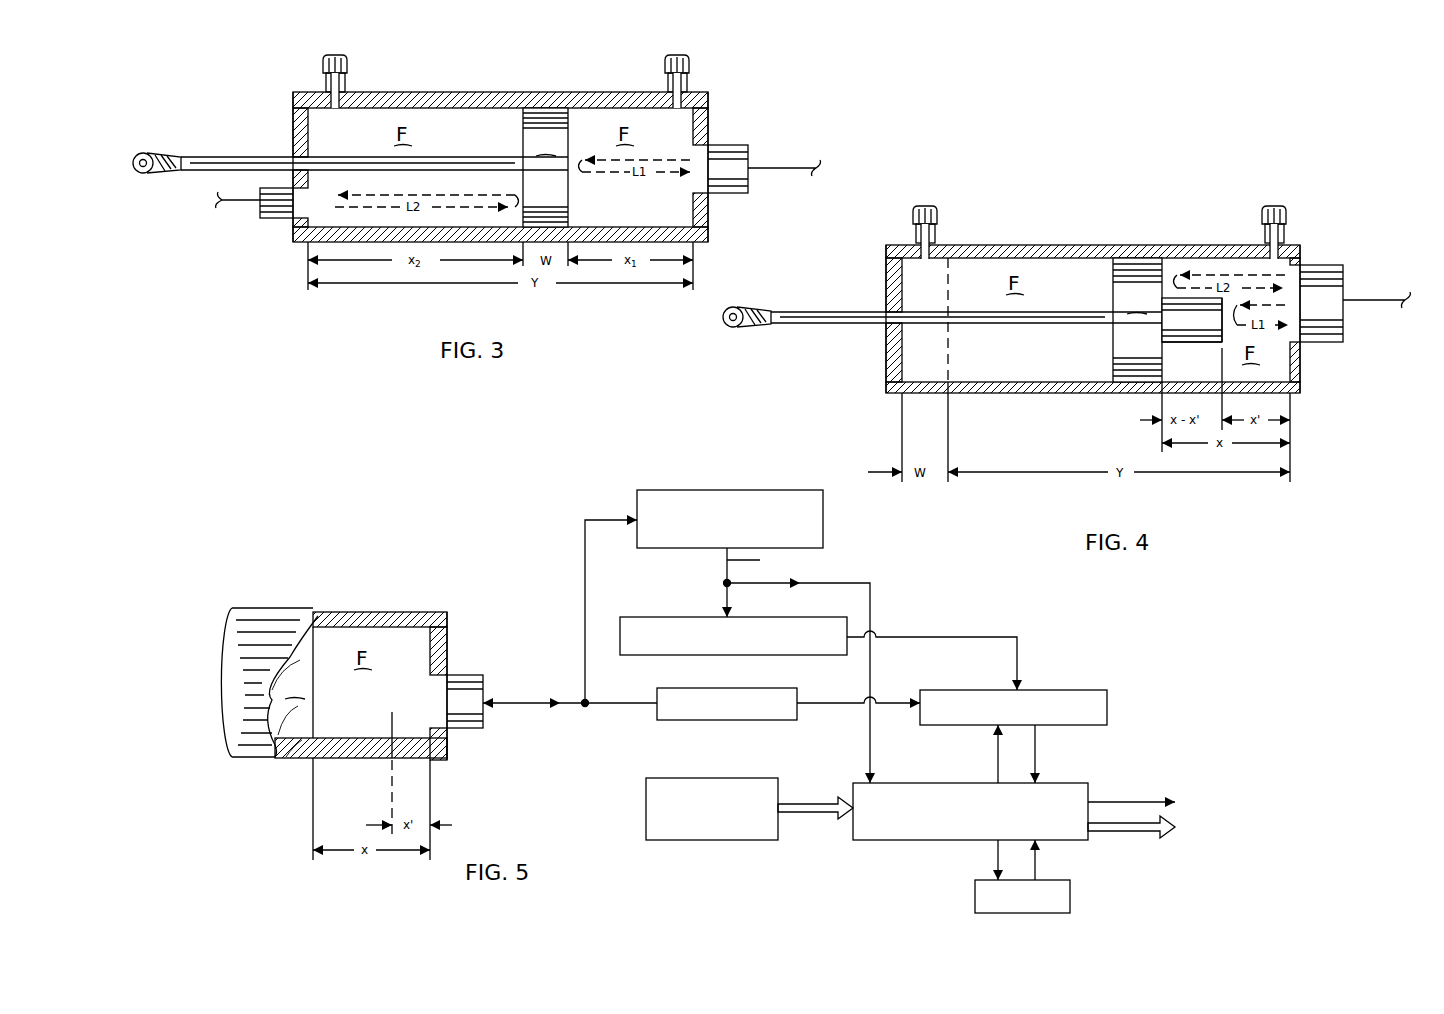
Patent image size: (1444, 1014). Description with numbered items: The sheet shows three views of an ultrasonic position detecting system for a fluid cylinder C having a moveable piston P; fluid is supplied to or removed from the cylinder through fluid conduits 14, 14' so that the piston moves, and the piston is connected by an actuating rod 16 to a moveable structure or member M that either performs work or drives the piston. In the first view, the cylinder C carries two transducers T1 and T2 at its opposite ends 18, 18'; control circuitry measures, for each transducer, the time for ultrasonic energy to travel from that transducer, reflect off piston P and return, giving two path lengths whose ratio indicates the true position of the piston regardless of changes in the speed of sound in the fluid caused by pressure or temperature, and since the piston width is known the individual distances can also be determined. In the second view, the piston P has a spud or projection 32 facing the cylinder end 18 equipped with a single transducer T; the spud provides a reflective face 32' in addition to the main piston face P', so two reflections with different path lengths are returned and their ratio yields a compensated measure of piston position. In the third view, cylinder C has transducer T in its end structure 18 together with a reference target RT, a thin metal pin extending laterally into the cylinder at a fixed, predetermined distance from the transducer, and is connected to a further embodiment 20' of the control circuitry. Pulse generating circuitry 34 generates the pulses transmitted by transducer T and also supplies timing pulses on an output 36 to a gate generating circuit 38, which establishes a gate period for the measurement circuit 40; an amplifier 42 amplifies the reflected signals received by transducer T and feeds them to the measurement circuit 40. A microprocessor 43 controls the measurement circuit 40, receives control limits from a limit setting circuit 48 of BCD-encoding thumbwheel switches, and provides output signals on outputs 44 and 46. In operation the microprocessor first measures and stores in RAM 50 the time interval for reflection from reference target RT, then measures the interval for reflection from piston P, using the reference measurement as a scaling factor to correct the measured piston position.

In FIG. 3, the fluid conduit 14 is at (377, 62).
In FIG. 4, the fluid conduit 14 is at (966, 215).
In FIG. 3, the fluid conduit 14' is at (720, 67).
In FIG. 4, the fluid conduit 14' is at (1321, 219).
In FIG. 3, the actuating rod 16 is at (345, 157).
In FIG. 4, the actuating rod 16 is at (930, 312).
In FIG. 3, the cylinder end 18 is at (754, 161).
In FIG. 4, the cylinder end 18 is at (1348, 305).
In FIG. 5, the cylinder end 18 is at (471, 664).
In FIG. 3, the cylinder end 18' is at (243, 160).
In FIG. 4, the cylinder end 18' is at (847, 319).
In FIG. 5, the control circuitry 20' is at (854, 700).
In FIG. 4, the spud or projection 32 is at (1155, 383).
In FIG. 4, the reflective face 32' is at (1293, 369).
In FIG. 5, the pulse generating circuitry 34 is at (698, 490).
In FIG. 5, the output 36 is at (727, 563).
In FIG. 5, the gate generating circuit 38 is at (698, 617).
In FIG. 5, the measurement circuit 40 is at (1080, 690).
In FIG. 5, the amplifier 42 is at (675, 720).
In FIG. 5, the microprocessor 43 is at (870, 840).
In FIG. 5, the output 44 is at (1140, 802).
In FIG. 5, the output 46 is at (1145, 834).
In FIG. 5, the limit setting circuit 48 is at (665, 840).
In FIG. 5, the RAM 50 is at (995, 880).
In FIG. 3, the fluid cylinder C is at (505, 92).
In FIG. 4, the fluid cylinder C is at (1095, 245).
In FIG. 5, the fluid cylinder C is at (300, 612).
In FIG. 3, the piston P is at (545, 167).
In FIG. 4, the piston P is at (1137, 320).
In FIG. 5, the piston P is at (269, 682).
In FIG. 4, the main piston face P' is at (1192, 260).
In FIG. 4, the transducer T is at (1325, 345).
In FIG. 5, the transducer T is at (465, 730).
In FIG. 3, the transducer T1 is at (733, 195).
In FIG. 3, the transducer T2 is at (283, 220).
In FIG. 4, the moveable structure M is at (740, 329).
In FIG. 5, the reference target RT is at (392, 765).